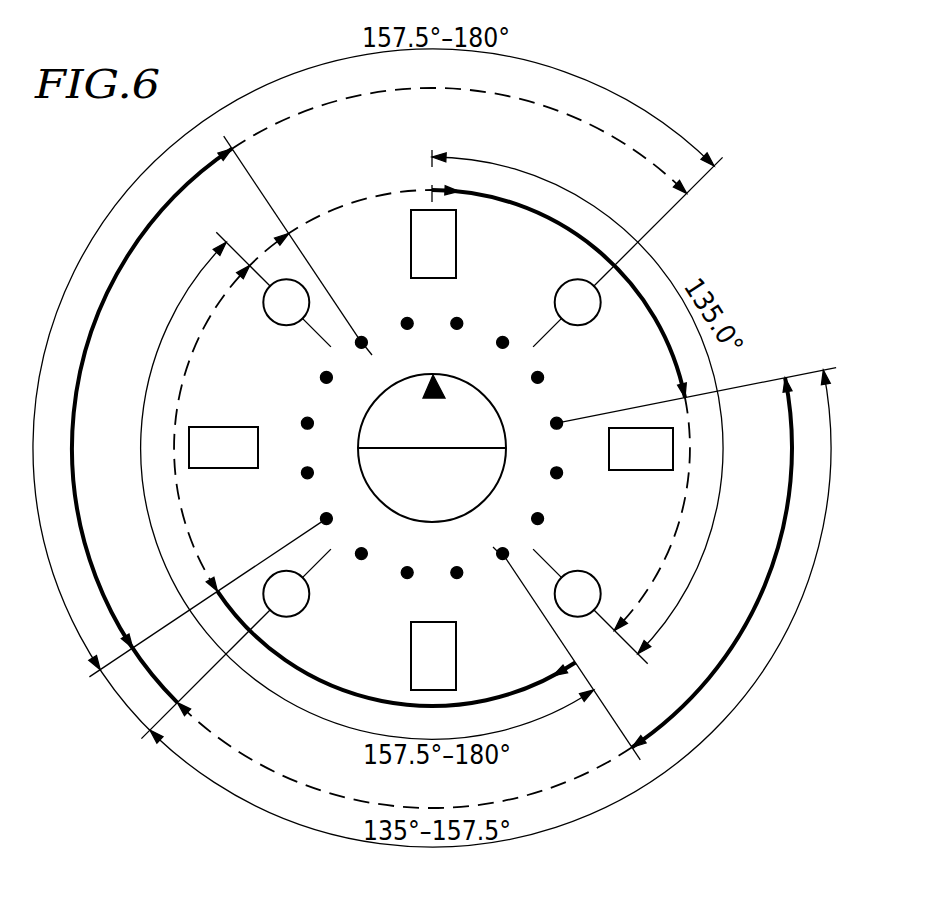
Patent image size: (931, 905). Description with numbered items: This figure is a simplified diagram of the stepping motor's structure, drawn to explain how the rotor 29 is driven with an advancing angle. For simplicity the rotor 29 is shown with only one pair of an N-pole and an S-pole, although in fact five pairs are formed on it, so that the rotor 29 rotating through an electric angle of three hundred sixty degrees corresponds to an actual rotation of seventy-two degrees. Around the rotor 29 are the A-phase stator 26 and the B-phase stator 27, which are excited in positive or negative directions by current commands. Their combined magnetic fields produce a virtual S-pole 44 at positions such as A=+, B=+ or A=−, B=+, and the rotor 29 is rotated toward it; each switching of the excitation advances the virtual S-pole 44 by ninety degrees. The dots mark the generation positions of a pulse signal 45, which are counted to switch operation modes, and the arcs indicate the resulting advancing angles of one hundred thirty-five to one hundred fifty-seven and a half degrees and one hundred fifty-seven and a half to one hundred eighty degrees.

The A-phase stator 26 is at (456, 232).
The B-phase stator 27 is at (222, 427).
The rotor 29 is at (500, 487).
The virtual S-pole 44 is at (303, 287).
The generation position of a pulse signal 45 is at (458, 317).